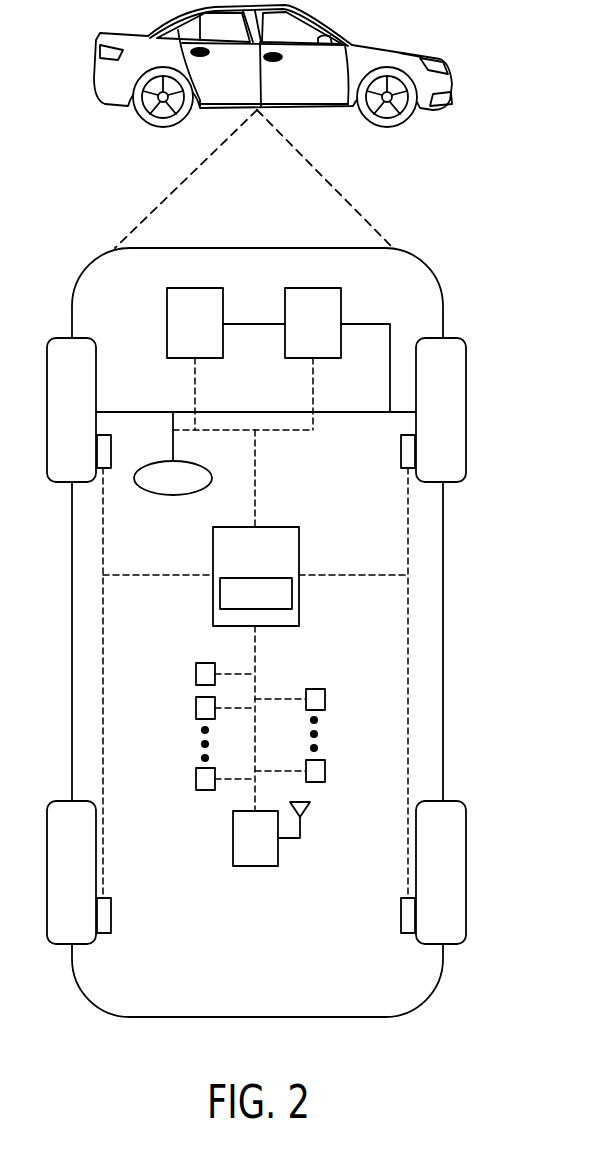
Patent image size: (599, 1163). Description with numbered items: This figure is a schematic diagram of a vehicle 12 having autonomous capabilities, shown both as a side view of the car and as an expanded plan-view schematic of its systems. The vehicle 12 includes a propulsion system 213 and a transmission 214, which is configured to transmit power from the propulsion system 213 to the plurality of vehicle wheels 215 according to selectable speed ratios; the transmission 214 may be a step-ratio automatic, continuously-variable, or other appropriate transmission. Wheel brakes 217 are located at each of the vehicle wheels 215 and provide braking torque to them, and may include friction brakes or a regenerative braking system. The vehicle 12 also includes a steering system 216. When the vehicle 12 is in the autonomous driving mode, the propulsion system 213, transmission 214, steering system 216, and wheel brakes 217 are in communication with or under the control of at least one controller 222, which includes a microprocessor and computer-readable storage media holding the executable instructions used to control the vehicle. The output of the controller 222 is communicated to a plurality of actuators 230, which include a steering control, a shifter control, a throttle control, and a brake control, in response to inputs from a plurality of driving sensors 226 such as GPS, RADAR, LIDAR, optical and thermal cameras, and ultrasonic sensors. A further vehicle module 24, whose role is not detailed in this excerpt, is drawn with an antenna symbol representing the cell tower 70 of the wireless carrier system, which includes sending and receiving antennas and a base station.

The vehicle 12 is at (93, 80).
The controller 24 is at (286, 730).
The cell tower 70 is at (303, 828).
The propulsion system 213 is at (166, 320).
The transmission 214 is at (342, 302).
The vehicle wheels 215 is at (97, 388).
The steering system 216 is at (173, 495).
The wheel brakes 217 is at (111, 452).
The controller 222 is at (300, 585).
The driving sensors 226 is at (196, 673).
The actuators 230 is at (325, 698).